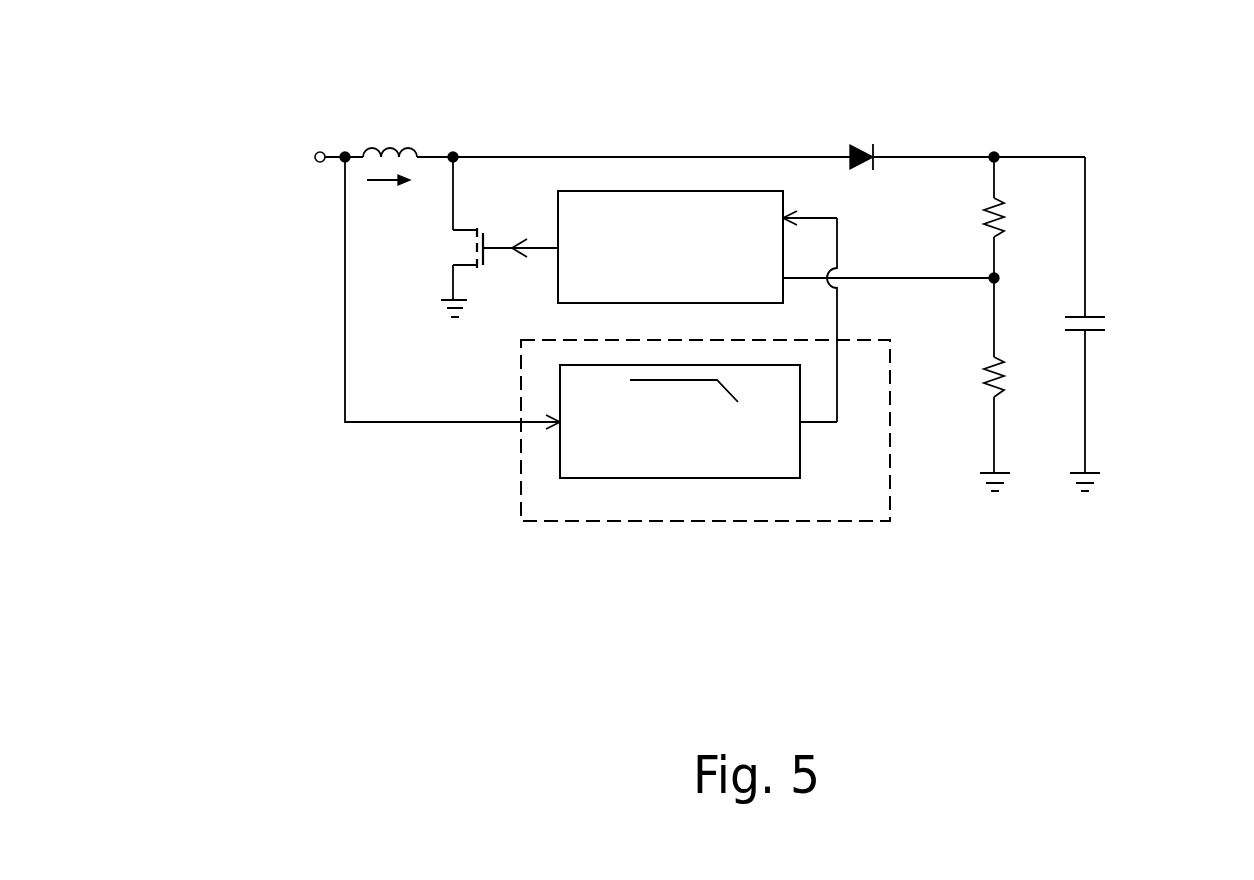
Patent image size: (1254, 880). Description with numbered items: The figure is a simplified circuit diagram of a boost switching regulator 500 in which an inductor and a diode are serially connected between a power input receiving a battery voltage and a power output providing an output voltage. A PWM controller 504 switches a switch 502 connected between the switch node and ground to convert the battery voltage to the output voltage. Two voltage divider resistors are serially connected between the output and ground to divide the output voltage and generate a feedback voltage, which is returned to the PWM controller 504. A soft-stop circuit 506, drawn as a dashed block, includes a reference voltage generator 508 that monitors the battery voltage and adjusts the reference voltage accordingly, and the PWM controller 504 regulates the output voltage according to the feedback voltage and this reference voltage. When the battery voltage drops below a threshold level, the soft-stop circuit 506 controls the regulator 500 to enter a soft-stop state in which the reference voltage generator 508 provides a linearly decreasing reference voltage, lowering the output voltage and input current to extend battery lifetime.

The boost switching regulator 500 is at (1157, 88).
The switch 502 is at (447, 250).
The PWM controller 504 is at (668, 191).
The soft-stop circuit 506 is at (833, 521).
The reference voltage generator 508 is at (672, 478).